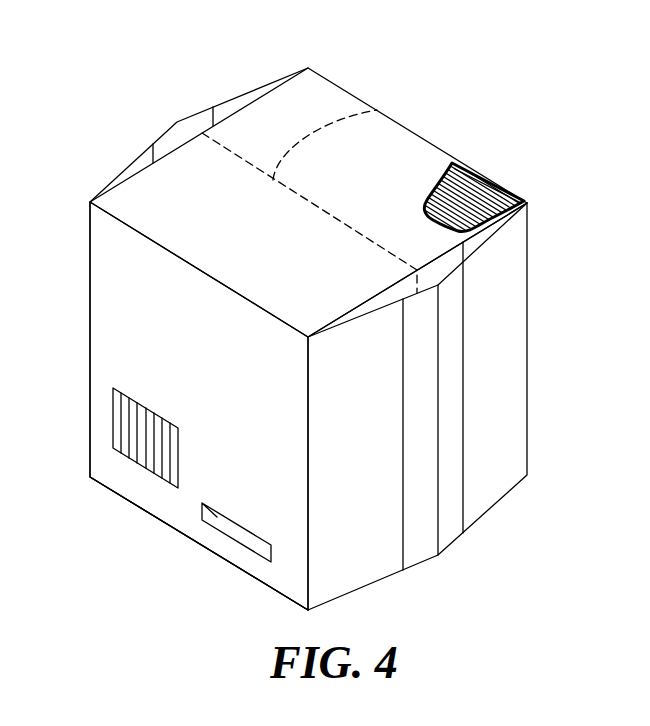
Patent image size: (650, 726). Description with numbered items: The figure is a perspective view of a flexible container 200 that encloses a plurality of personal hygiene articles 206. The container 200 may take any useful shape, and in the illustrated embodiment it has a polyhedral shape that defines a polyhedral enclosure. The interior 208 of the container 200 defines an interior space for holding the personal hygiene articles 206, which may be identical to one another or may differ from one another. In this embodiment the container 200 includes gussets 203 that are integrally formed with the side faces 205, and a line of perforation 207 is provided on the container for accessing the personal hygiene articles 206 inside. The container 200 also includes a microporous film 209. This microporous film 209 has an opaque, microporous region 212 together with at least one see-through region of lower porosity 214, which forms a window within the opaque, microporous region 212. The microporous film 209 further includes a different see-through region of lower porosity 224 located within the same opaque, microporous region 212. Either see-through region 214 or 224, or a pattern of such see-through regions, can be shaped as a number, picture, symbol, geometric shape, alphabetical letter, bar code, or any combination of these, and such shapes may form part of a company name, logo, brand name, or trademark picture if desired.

The flexible container 200 is at (428, 78).
The gussets 203 is at (447, 518).
The side faces 205 is at (500, 368).
The personal hygiene articles 206 is at (137, 450).
The line of perforation 207 is at (377, 110).
The interior 208 is at (480, 183).
The microporous film 209 is at (122, 310).
The opaque, microporous region 212 is at (181, 504).
The see-through region of lower porosity 214 is at (110, 420).
The see-through region of lower porosity 224 is at (232, 528).